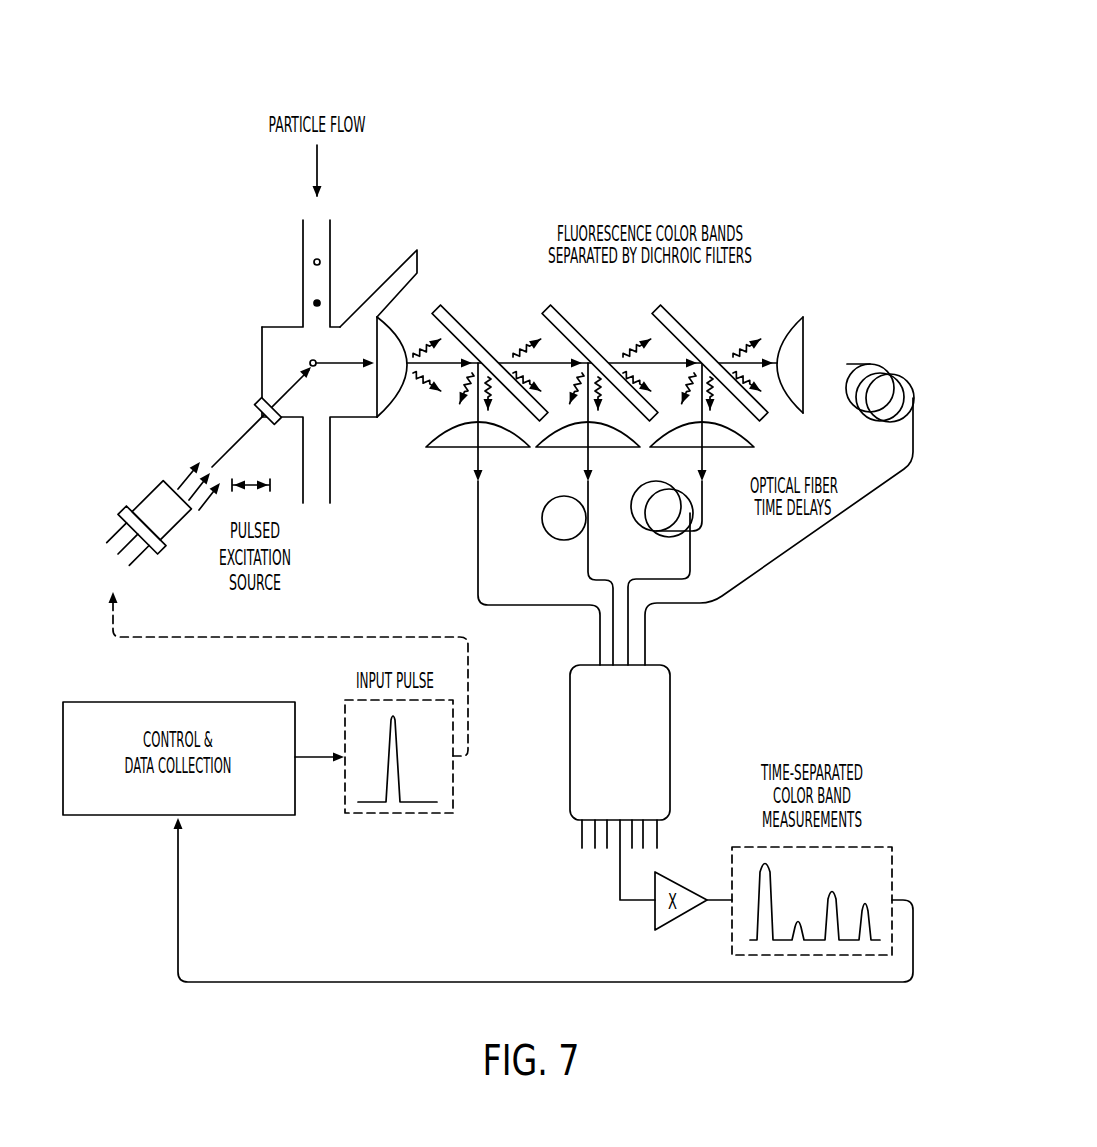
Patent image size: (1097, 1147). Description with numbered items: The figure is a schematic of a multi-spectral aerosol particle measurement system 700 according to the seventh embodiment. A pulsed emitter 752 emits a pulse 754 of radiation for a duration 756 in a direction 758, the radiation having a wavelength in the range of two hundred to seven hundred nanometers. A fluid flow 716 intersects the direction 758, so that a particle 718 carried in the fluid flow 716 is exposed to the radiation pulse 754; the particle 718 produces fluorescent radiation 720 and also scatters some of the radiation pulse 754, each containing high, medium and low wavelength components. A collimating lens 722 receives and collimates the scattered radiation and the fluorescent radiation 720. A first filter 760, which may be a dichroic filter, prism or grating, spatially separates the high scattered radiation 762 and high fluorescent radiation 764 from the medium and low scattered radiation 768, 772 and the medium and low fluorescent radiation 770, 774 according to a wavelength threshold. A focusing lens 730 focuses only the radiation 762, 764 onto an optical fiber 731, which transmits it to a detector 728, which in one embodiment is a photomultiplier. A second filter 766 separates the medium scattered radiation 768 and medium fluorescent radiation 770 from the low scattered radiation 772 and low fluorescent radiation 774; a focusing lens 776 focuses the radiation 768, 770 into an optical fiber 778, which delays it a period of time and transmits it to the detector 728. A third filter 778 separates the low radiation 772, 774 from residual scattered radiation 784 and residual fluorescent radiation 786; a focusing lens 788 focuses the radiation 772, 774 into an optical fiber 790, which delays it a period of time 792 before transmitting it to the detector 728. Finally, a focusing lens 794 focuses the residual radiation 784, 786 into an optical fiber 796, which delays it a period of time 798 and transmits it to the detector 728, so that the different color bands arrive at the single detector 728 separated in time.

The multi-spectral aerosol particle measurement system 700 is at (809, 84).
The fluid flow 716 is at (318, 226).
The particle 718 is at (309, 361).
The fluorescent radiation 720 is at (412, 348).
The collimating lens 722 is at (380, 401).
The detector 728 is at (652, 700).
The focusing lens 730 is at (447, 438).
The optical fiber 731 is at (543, 607).
The pulsed emitter 752 is at (150, 488).
The pulse of radiation 754 is at (224, 412).
The direction 758 is at (233, 443).
The duration 756 is at (252, 487).
The filter 760 is at (474, 349).
The high scattered radiation 762 is at (456, 455).
The high fluorescent radiation 764 is at (476, 467).
The filter 766 is at (584, 349).
The medium scattered radiation 768 is at (582, 514).
The medium fluorescent radiation 770 is at (592, 464).
The low scattered radiation 772 is at (735, 447).
The low fluorescent radiation 774 is at (703, 468).
The focusing lens 776 is at (547, 447).
The filter 778 is at (694, 349).
The residual scattered radiation 784 is at (873, 414).
The residual fluorescent radiation 786 is at (827, 362).
The focusing lens 788 is at (740, 437).
The optical fiber 790 is at (683, 562).
The period of time 792 is at (683, 534).
The focusing lens 794 is at (800, 321).
The optical fiber 796 is at (807, 543).
The period of time 798 is at (883, 452).